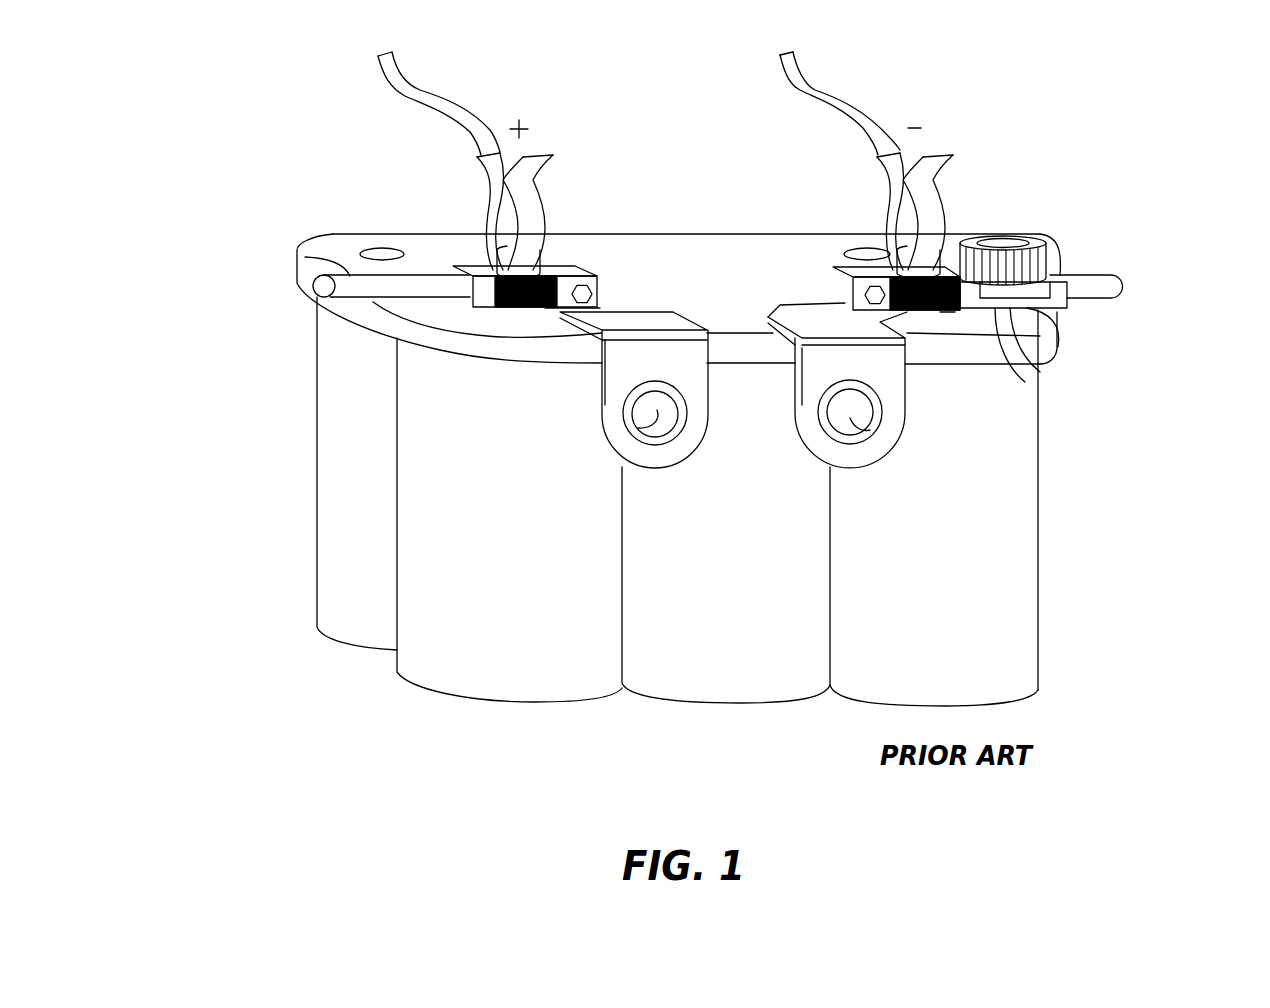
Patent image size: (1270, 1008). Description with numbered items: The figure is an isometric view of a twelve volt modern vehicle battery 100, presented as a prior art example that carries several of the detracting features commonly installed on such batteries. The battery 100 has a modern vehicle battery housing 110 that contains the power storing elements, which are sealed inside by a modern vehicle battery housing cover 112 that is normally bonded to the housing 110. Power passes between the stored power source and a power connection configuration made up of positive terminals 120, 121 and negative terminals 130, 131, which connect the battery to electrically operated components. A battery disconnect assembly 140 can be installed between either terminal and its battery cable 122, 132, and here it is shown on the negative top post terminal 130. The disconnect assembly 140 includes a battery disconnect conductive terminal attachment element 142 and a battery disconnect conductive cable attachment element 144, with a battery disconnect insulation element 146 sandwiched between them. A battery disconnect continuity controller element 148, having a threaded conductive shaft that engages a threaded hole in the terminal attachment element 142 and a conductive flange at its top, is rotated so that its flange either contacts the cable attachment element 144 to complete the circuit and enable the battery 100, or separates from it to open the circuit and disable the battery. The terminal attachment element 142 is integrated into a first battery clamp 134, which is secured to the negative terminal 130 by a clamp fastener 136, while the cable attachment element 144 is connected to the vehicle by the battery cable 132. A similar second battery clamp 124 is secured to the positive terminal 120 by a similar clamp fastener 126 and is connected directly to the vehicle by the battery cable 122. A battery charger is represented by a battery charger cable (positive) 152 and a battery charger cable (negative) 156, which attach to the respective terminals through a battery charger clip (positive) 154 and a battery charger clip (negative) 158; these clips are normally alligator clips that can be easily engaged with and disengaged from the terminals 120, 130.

The modern vehicle battery 100 is at (290, 131).
The modern vehicle battery housing 110 is at (993, 517).
The modern vehicle battery housing cover 112 is at (731, 263).
The positive terminal 120 is at (530, 271).
The positive terminal 121 is at (655, 416).
The battery cable 122 is at (340, 271).
The first battery clamp 124 is at (548, 312).
The clamp fastener 126 is at (600, 311).
The negative terminal 130 is at (863, 264).
The negative terminal 131 is at (857, 417).
The battery cable 132 is at (1087, 280).
The battery clamp 134 is at (947, 312).
The clamp fastener 136 is at (850, 300).
The battery disconnect assembly 140 is at (1045, 235).
The battery disconnect conductive terminal attachment element 142 is at (1000, 310).
The battery disconnect conductive cable attachment element 144 is at (1030, 290).
The battery disconnect insulation element 146 is at (993, 306).
The battery disconnect continuity controller element 148 is at (1053, 265).
The battery charger cable (positive) 152 is at (443, 112).
The battery charger clip (positive) 154 is at (530, 222).
The battery charger cable (negative) 156 is at (843, 112).
The battery charger clip (negative) 158 is at (927, 198).